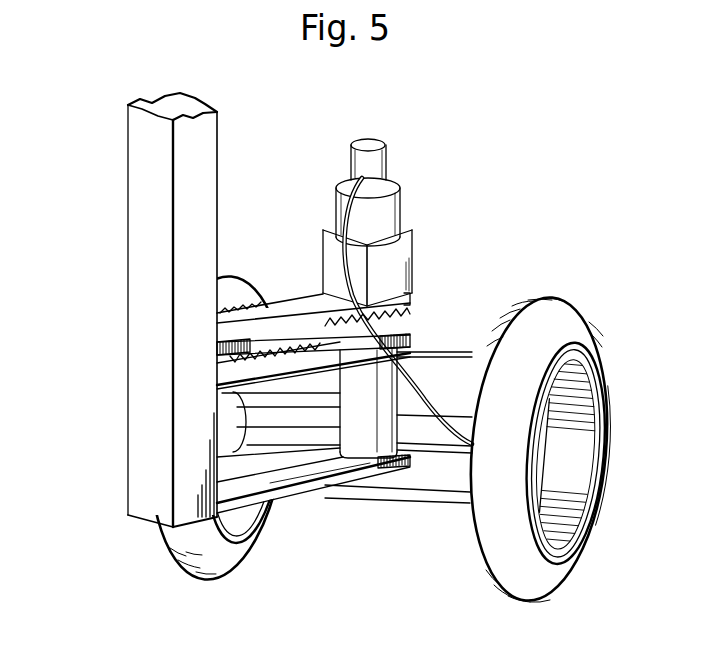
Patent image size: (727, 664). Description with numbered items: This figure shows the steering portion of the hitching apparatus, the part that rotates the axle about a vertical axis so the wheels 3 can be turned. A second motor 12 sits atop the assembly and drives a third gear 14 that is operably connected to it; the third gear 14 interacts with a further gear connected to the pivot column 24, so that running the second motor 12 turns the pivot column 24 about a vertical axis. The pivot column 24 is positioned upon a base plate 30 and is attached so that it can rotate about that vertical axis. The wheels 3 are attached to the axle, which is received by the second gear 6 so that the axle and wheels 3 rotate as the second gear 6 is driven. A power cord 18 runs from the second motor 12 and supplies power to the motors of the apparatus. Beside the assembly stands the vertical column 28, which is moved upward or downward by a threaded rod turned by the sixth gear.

The wheels 3 is at (593, 327).
The second gear 6 is at (250, 338).
The second motor 12 is at (390, 206).
The third gear 14 is at (407, 308).
The power cord 18 is at (412, 380).
The pivot column 24 is at (368, 443).
The vertical column 28 is at (155, 208).
The base plate 30 is at (447, 478).